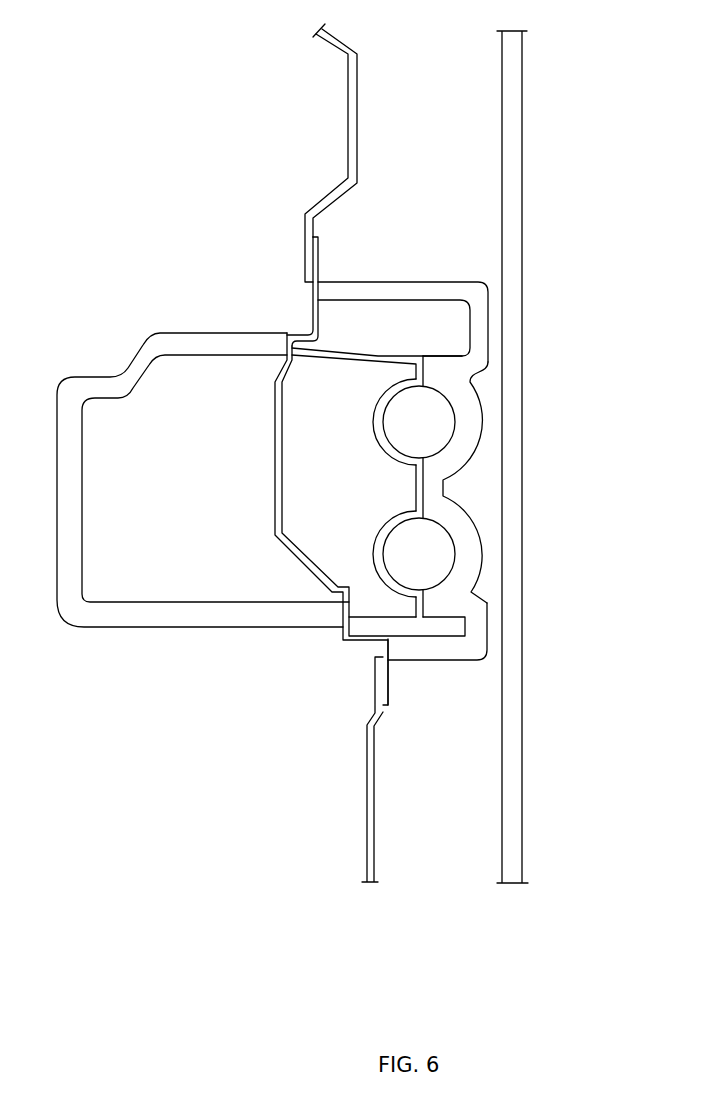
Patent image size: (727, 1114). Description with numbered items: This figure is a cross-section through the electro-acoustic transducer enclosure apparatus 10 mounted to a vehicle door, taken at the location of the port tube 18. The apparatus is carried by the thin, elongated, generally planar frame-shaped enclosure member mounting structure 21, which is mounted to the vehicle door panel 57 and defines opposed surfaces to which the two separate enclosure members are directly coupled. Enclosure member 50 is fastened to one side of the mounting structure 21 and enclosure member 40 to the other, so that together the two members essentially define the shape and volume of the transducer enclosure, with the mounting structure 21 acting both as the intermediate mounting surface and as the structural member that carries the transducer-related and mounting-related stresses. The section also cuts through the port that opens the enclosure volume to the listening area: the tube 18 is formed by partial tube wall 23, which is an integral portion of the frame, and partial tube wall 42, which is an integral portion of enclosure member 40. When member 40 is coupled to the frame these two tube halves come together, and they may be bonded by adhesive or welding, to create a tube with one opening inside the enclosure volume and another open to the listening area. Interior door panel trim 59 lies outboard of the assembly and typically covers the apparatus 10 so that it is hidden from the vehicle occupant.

The electro-acoustic transducer enclosure apparatus 10 is at (175, 284).
The port tube 18 is at (402, 482).
The enclosure member mounting structure 21 is at (316, 262).
The partial tube wall 23 is at (384, 407).
The enclosure member 40 is at (447, 287).
The partial tube wall 42 is at (485, 420).
The enclosure member 50 is at (191, 335).
The vehicle door panel 57 is at (357, 125).
The interior door panel trim 59 is at (524, 151).